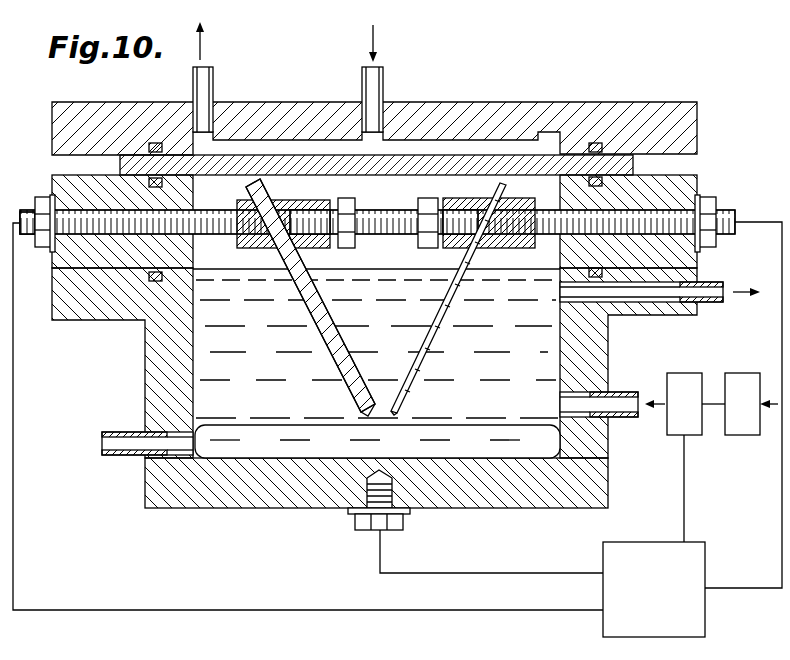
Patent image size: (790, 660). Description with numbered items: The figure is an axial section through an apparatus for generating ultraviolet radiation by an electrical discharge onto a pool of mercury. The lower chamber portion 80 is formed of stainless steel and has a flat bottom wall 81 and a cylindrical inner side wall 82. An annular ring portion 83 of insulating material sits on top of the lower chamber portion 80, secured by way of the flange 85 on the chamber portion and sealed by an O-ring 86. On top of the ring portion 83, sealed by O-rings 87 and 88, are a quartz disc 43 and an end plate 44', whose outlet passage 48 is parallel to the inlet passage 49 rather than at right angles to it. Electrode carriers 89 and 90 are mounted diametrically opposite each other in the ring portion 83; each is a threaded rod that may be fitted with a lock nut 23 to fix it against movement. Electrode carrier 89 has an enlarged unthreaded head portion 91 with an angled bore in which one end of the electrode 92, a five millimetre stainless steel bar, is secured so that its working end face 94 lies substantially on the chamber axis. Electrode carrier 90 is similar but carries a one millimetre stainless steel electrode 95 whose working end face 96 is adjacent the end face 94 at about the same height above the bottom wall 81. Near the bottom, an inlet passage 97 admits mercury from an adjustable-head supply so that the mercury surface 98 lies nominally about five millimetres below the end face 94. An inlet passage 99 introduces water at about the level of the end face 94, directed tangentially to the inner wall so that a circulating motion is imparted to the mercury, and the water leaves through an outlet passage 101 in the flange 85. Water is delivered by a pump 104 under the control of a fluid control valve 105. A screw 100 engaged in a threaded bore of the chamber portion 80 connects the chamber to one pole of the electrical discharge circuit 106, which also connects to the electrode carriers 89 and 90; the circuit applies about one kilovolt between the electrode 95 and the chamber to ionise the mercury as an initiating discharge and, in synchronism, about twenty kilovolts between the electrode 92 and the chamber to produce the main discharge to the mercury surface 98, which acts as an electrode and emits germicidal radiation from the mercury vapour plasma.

The lock nut 23 is at (38, 200).
The quartz disc 43 is at (618, 160).
The end plate 44' is at (376, 123).
The outlet passage 48 is at (210, 95).
The inlet passage 49 is at (380, 96).
The lower chamber portion 80 is at (393, 351).
The bottom wall 81 is at (490, 462).
The inner side wall 82 is at (192, 375).
The annular ring portion 83 is at (680, 192).
The flange 85 is at (667, 310).
The O-ring 86 is at (603, 274).
The O-ring 87 is at (156, 143).
The O-ring 88 is at (148, 183).
The electrode carrier 89 is at (56, 256).
The electrode carrier 90 is at (640, 210).
The head portion 91 is at (298, 200).
The electrode 92 is at (336, 350).
The working end face 94 is at (370, 414).
The electrode 95 is at (433, 338).
The working end face 96 is at (400, 417).
The inlet passage 97 is at (127, 446).
The surface of the mercury 98 is at (343, 198).
The inlet passage 99 is at (625, 417).
The screw 100 is at (398, 522).
The outlet passage 101 is at (714, 298).
The pump 104 is at (742, 435).
The fluid control valve 105 is at (675, 435).
The electrical discharge circuit 106 is at (646, 556).